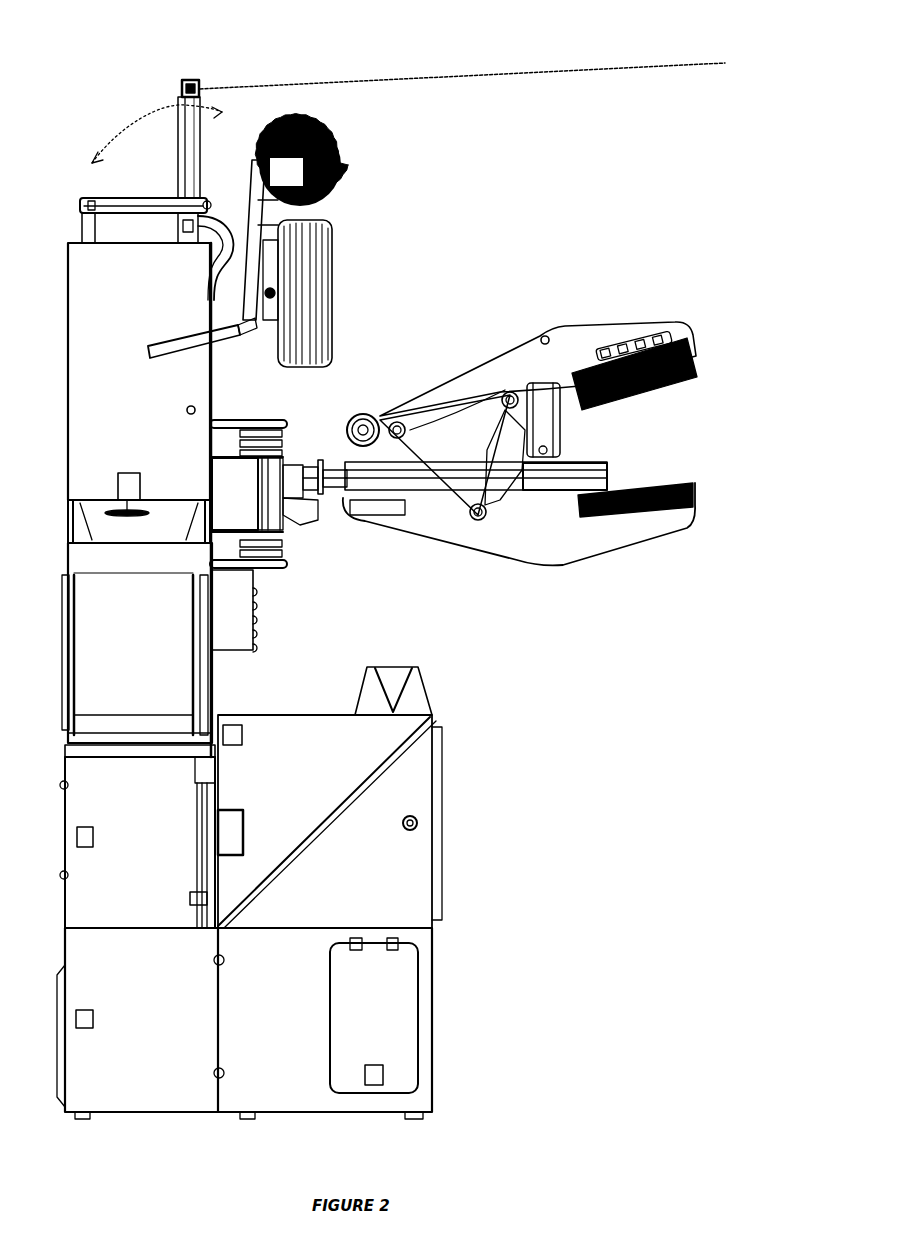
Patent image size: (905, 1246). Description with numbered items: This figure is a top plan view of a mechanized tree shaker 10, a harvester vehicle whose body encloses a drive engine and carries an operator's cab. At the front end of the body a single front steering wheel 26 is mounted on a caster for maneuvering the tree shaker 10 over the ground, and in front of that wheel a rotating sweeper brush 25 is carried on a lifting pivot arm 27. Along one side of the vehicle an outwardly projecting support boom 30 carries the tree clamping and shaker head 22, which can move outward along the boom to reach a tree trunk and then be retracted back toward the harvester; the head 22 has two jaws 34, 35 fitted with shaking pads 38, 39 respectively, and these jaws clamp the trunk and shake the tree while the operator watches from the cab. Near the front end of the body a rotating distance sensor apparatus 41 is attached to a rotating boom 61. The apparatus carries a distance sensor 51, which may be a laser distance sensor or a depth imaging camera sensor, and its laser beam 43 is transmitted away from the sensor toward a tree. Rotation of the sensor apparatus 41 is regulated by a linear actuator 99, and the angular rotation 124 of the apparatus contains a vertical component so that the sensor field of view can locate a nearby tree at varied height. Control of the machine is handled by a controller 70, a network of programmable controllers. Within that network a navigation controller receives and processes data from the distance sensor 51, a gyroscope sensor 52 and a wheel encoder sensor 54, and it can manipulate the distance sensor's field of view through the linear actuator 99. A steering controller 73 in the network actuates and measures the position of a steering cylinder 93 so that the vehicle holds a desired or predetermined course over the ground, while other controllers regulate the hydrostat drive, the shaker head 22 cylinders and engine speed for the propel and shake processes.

The mechanized tree shaker 10 is at (598, 785).
The tree clamping and shaker head 22 is at (578, 530).
The rotating sweeper brush 25 is at (337, 148).
The front steering wheel 26 is at (333, 262).
The lifting pivot arm 27 is at (253, 237).
The support boom 30 is at (573, 487).
The jaw 34 is at (648, 322).
The jaw 35 is at (643, 541).
The shaking pad 38 is at (683, 380).
The shaking pad 39 is at (672, 480).
The rotating distance sensor apparatus 41 is at (187, 120).
The laser beam 43 is at (676, 72).
The distance sensor 51 is at (193, 73).
The gyroscope sensor 52 is at (182, 410).
The wheel encoder sensor 54 is at (417, 823).
The rotating boom 61 is at (178, 197).
The controller 70 is at (250, 822).
The steering controller 73 is at (108, 495).
The steering cylinder 93 is at (138, 347).
The linear actuator 99 is at (113, 212).
The angular rotation 124 is at (157, 133).